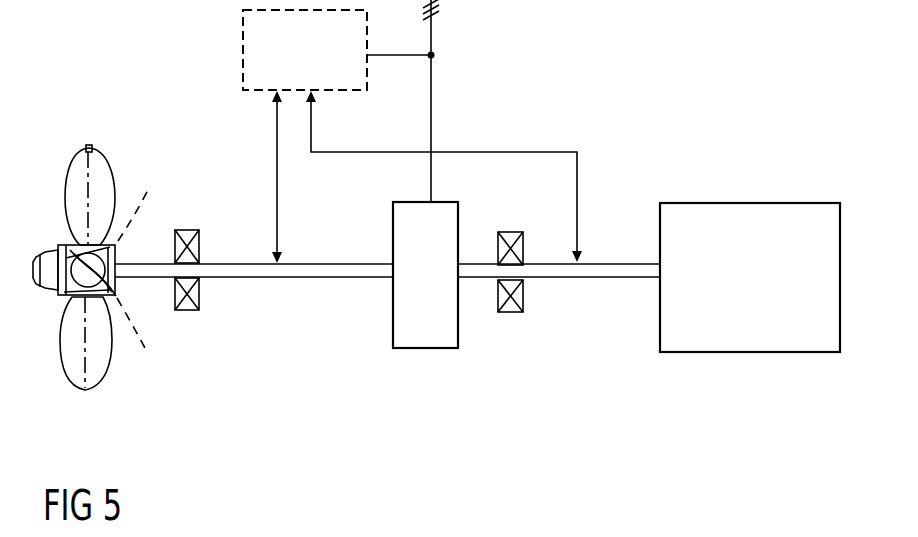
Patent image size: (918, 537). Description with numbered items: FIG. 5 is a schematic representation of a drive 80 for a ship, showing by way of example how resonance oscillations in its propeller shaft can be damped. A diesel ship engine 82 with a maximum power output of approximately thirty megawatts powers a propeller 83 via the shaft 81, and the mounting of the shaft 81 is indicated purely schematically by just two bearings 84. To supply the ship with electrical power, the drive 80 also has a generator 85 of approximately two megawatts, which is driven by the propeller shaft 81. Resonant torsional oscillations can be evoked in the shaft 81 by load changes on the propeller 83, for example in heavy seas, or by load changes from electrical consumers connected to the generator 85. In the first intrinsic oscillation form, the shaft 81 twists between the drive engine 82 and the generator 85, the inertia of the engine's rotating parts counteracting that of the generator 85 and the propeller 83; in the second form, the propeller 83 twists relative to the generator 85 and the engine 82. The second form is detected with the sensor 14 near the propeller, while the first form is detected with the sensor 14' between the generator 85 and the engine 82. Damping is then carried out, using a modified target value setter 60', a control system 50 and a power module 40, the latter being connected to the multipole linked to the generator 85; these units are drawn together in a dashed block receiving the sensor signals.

The drive 80 is at (148, 50).
The propeller 83 is at (77, 160).
The shaft 81 is at (305, 279).
The bearings 84 is at (187, 311).
The generator 85 is at (445, 350).
The diesel ship engine 82 is at (731, 203).
The sensor 14 is at (243, 238).
The sensor 14' is at (613, 237).
The power module 40 is at (286, 65).
The control system 50 is at (320, 65).
The modified target value setter 60' is at (305, 50).